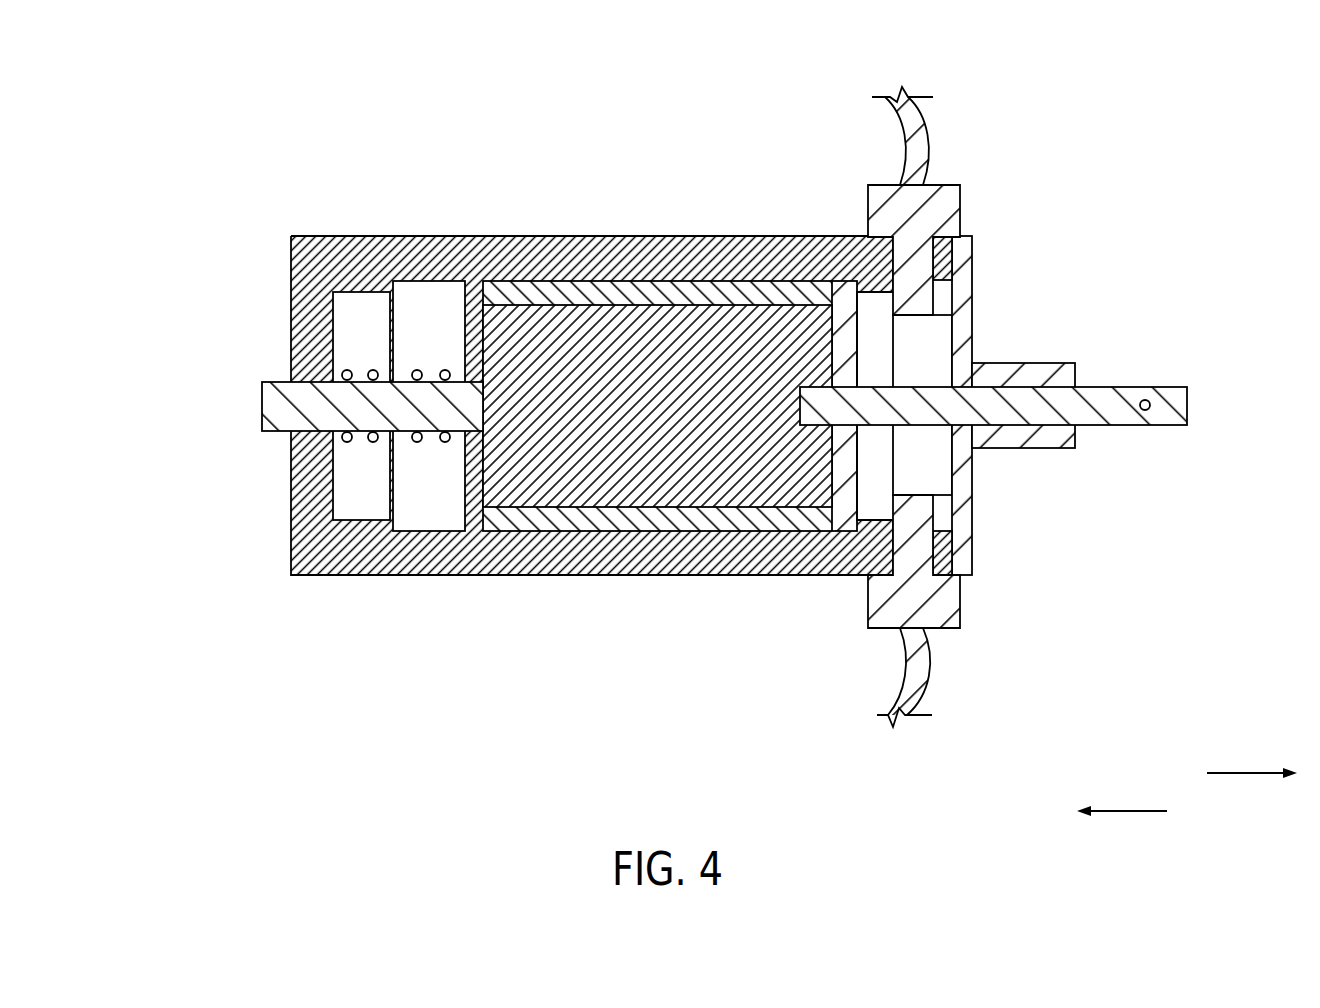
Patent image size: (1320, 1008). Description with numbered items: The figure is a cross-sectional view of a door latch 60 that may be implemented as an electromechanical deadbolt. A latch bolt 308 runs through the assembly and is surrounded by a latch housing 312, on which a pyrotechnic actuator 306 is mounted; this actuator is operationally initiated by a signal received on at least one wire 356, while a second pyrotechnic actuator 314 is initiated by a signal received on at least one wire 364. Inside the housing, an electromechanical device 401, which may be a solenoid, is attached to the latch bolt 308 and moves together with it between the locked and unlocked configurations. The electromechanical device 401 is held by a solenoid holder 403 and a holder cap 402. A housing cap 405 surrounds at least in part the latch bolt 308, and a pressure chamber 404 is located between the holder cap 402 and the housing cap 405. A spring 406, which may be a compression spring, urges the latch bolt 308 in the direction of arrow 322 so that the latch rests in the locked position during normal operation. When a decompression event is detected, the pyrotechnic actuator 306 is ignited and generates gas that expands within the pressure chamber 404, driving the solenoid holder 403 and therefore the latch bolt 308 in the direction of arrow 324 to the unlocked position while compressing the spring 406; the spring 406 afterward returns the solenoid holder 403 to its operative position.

The door latch 60 is at (702, 398).
The pyrotechnic actuator 306 is at (940, 200).
The latch bolt 308 is at (1172, 397).
The latch housing 312 is at (453, 236).
The pyrotechnic actuator 314 is at (948, 600).
The arrow 322 is at (1233, 774).
The arrow 324 is at (1139, 811).
The wire 356 is at (915, 125).
The wire 364 is at (920, 680).
The electromechanical device 401 is at (703, 510).
The holder cap 402 is at (815, 532).
The solenoid holder 403 is at (592, 425).
The pressure chamber 404 is at (932, 458).
The housing cap 405 is at (972, 308).
The spring 406 is at (417, 372).